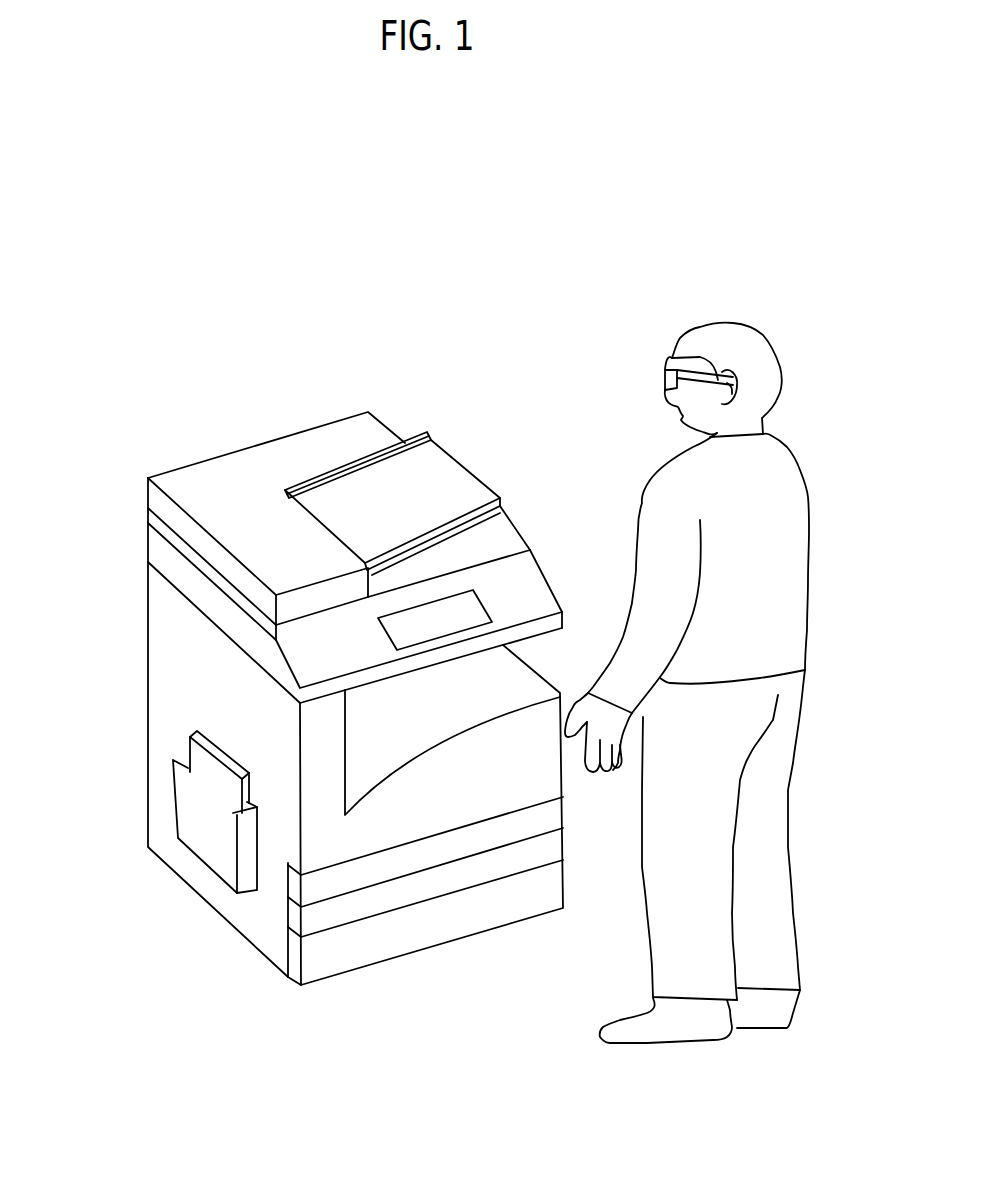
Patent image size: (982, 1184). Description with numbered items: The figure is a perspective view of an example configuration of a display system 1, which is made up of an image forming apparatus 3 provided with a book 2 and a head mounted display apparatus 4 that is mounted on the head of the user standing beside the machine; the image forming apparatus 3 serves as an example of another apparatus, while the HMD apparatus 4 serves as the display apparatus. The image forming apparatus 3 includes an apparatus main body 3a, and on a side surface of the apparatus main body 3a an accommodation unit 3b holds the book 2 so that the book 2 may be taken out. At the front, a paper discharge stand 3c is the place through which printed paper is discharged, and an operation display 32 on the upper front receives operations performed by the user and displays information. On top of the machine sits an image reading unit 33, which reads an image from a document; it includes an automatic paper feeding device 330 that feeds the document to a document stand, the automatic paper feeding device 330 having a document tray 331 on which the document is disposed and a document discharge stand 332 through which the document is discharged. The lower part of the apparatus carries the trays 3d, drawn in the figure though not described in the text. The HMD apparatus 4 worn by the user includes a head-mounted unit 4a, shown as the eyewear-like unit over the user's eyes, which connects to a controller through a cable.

The display system 1 is at (648, 255).
The book 2 is at (187, 745).
The image forming apparatus 3 is at (221, 433).
The apparatus main body 3a is at (165, 612).
The accommodation unit 3b is at (187, 802).
The paper discharge stand 3c is at (502, 675).
The sheet feed trays 3d is at (398, 867).
The head mounted display apparatus 4 is at (653, 355).
The head-mounted unit 4a is at (663, 382).
The operation display 32 is at (468, 607).
The image reading unit 33 is at (128, 485).
The automatic paper feeding device 330 is at (203, 465).
The document tray 331 is at (432, 462).
The document discharge stand 332 is at (490, 528).